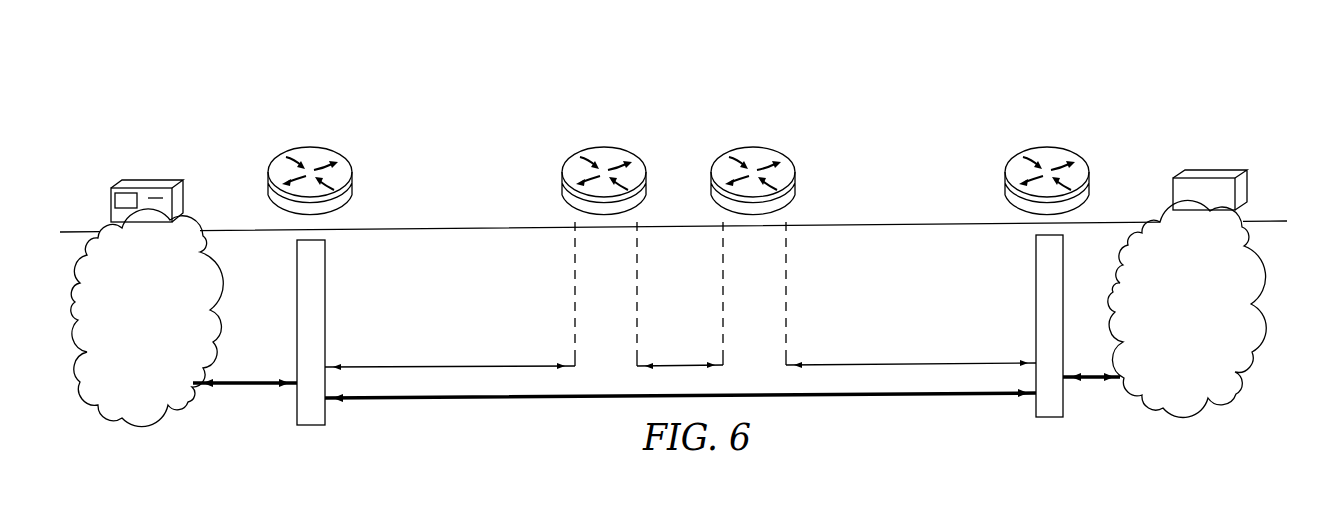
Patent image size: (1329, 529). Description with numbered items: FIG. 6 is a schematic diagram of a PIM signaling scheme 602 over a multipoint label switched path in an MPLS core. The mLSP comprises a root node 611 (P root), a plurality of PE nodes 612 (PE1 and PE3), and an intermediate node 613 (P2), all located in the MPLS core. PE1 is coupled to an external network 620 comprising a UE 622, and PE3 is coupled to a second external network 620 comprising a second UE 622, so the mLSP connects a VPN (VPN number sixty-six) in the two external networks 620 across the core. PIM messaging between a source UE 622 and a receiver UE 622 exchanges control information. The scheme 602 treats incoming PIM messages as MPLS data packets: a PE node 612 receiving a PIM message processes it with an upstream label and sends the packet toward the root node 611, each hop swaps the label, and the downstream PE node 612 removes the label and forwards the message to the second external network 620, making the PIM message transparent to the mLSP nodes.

The PIM signaling scheme 602 is at (186, 78).
The root node 611 is at (561, 182).
The PE nodes 612 is at (353, 185).
The intermediate node 613 is at (797, 182).
The external network 620 is at (213, 314).
The UE 622 is at (185, 197).